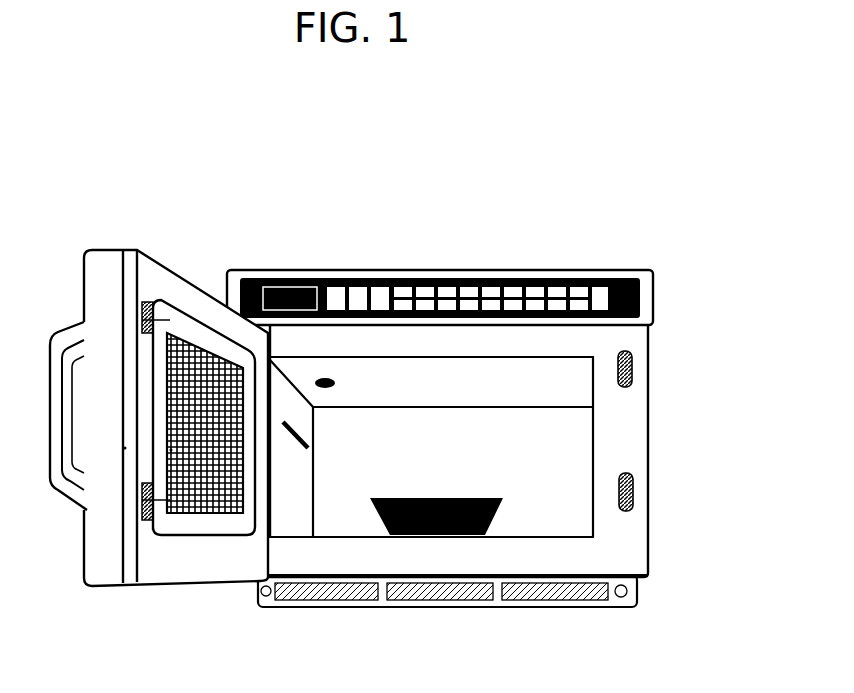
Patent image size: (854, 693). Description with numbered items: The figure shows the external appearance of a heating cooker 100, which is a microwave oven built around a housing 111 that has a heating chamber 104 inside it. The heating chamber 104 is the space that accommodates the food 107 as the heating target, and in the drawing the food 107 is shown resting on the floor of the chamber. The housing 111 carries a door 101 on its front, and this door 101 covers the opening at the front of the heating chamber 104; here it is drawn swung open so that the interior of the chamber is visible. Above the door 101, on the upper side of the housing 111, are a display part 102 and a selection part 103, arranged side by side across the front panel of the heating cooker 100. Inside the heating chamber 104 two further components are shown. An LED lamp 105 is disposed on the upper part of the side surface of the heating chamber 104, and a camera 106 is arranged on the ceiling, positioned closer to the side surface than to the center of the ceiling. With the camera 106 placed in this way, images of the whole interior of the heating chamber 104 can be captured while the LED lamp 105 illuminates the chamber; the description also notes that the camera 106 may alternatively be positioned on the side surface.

The heating cooker 100 is at (627, 270).
The door 101 is at (178, 292).
The display part 102 is at (298, 290).
The selection part 103 is at (422, 295).
The heating chamber 104 is at (560, 440).
The LED lamp 105 is at (300, 460).
The camera 106 is at (330, 388).
The food 107 is at (447, 537).
The housing 111 is at (583, 557).